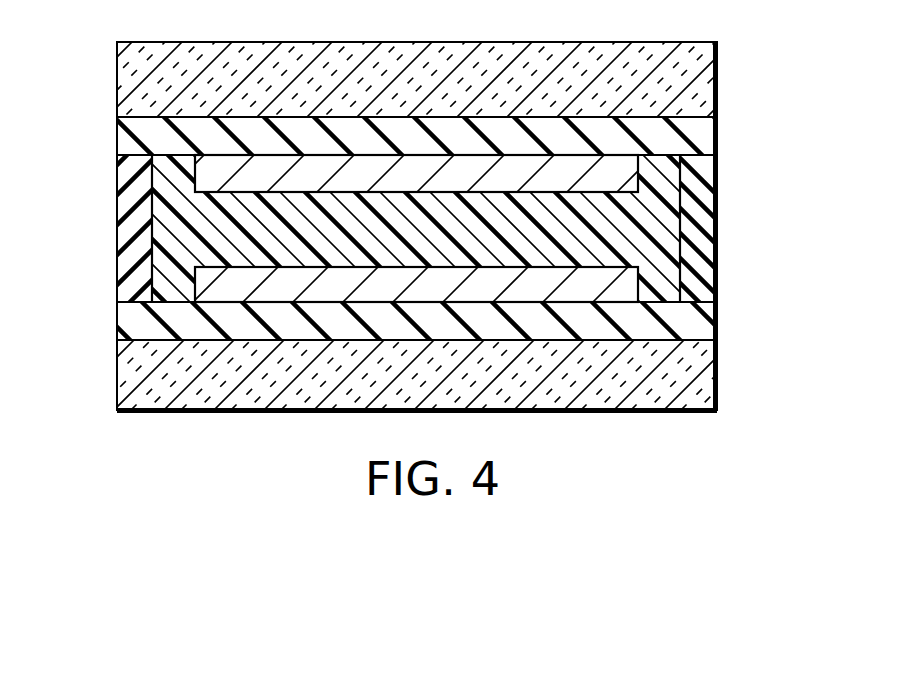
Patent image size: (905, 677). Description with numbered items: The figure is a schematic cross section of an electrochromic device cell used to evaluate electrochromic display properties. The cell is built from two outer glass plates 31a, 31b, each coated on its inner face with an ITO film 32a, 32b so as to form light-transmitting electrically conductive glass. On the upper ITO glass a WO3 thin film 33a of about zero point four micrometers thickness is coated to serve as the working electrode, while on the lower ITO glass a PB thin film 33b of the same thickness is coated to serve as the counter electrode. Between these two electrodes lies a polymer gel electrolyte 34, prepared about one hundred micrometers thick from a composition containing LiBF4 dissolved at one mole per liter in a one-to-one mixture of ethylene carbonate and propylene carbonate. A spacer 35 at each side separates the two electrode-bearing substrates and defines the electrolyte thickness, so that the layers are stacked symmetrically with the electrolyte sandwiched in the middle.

The glass plate 31a is at (703, 67).
The glass plate 31b is at (127, 388).
The ITO film 32a is at (703, 142).
The ITO film 32b is at (127, 325).
The WO3 thin film 33a is at (605, 176).
The PB thin film 33b is at (247, 290).
The polymer gel electrolyte 34 is at (660, 232).
The spacer 35 is at (702, 277).